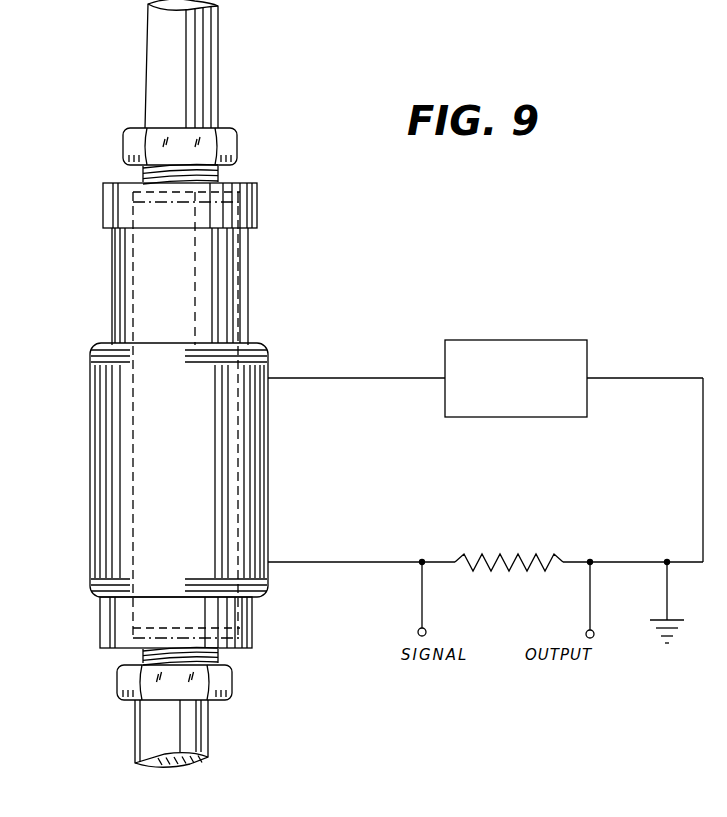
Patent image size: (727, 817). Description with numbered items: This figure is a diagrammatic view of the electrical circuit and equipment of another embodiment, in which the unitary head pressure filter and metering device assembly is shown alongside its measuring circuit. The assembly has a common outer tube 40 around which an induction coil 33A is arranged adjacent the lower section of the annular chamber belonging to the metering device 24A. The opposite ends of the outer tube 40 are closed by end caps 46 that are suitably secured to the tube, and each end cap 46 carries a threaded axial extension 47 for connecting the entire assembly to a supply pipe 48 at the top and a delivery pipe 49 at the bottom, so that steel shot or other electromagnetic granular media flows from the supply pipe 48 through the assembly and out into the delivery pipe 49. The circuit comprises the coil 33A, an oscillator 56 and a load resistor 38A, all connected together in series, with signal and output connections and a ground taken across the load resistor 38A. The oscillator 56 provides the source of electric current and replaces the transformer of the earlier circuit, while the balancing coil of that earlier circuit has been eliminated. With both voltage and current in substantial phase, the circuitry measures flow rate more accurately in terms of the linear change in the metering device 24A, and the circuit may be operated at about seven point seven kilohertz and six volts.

The metering device 24A is at (83, 347).
The induction coil 33A is at (262, 438).
The load resistor 38A is at (533, 525).
The outer tube 40 is at (227, 285).
The end cap 46 is at (258, 200).
The threaded axial extension 47 is at (218, 173).
The supply pipe 48 is at (213, 67).
The delivery pipe 49 is at (212, 727).
The oscillator 56 is at (535, 318).